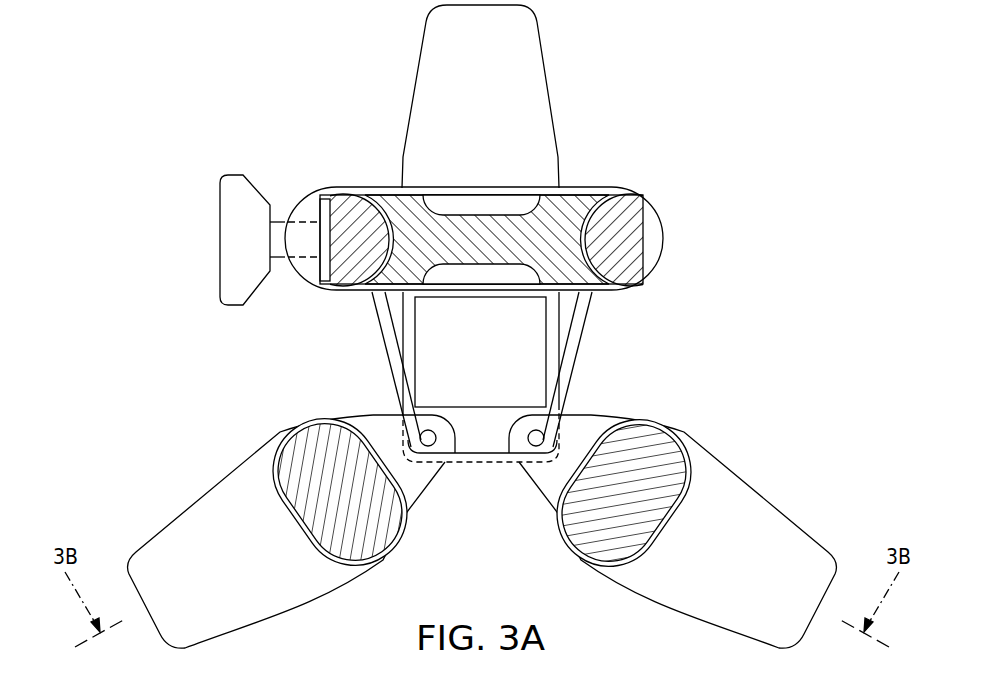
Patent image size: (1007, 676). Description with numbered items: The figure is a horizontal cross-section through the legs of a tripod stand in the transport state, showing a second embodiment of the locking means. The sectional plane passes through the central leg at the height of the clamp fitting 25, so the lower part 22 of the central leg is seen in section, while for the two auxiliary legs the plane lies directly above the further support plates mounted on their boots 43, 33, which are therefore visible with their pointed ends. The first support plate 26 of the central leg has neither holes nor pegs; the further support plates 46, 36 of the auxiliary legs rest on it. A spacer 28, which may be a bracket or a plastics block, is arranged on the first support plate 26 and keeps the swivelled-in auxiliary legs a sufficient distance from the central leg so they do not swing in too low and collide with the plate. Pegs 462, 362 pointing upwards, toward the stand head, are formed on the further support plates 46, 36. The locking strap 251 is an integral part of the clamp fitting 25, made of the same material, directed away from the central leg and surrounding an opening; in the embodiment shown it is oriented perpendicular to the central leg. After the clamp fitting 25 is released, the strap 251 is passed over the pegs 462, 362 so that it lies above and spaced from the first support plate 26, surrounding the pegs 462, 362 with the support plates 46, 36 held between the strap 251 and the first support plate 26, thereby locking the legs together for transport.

The lower part 22 is at (557, 61).
The clamp fitting 25 is at (618, 189).
The locking strap 251 is at (582, 305).
The first support plate 26 is at (553, 337).
The spacer 28 is at (473, 349).
The boot 43 is at (223, 459).
The boot 33 is at (727, 447).
The further support plate 46 is at (416, 499).
The further support plate 36 is at (546, 496).
The peg 462 is at (421, 436).
The peg 362 is at (543, 436).